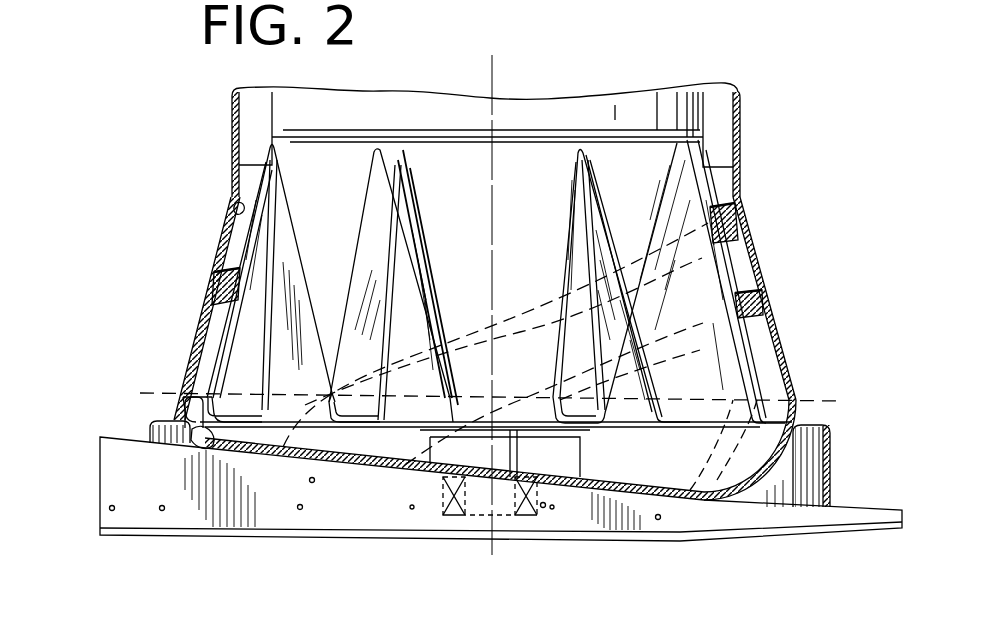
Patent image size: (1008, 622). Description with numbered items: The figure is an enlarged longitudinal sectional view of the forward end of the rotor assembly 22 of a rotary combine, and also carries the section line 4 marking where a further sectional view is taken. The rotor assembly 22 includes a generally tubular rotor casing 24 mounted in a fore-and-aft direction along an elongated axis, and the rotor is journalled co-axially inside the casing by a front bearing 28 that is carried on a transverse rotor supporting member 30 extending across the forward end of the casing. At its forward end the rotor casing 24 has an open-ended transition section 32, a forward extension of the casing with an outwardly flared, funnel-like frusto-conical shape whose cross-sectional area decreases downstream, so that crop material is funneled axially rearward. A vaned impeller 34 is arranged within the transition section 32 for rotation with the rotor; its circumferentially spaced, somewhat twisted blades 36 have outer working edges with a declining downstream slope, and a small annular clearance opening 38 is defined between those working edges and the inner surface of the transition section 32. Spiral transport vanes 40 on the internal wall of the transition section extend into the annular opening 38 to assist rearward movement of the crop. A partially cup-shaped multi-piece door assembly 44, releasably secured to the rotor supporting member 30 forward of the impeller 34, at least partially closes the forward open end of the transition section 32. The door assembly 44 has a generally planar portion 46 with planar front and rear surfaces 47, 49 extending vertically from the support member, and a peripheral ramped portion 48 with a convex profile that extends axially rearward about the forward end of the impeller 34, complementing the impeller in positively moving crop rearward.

The rotor assembly 22 is at (539, 91).
The rotor casing 24 is at (742, 130).
The front bearing 28 is at (440, 494).
The rotor supporting member 30 is at (125, 470).
The transition section 32 is at (790, 329).
The vaned impeller 34 is at (730, 244).
The blades 36 is at (520, 311).
The annular clearance opening 38 is at (233, 210).
The spiral transport vanes 40 is at (761, 310).
The door assembly 44 is at (786, 474).
The planar portion 46 is at (630, 490).
The front surface 47 is at (286, 456).
The ramped portion 48 is at (213, 443).
The rear surface 49 is at (678, 488).
The section line 4- 4 is at (138, 392).